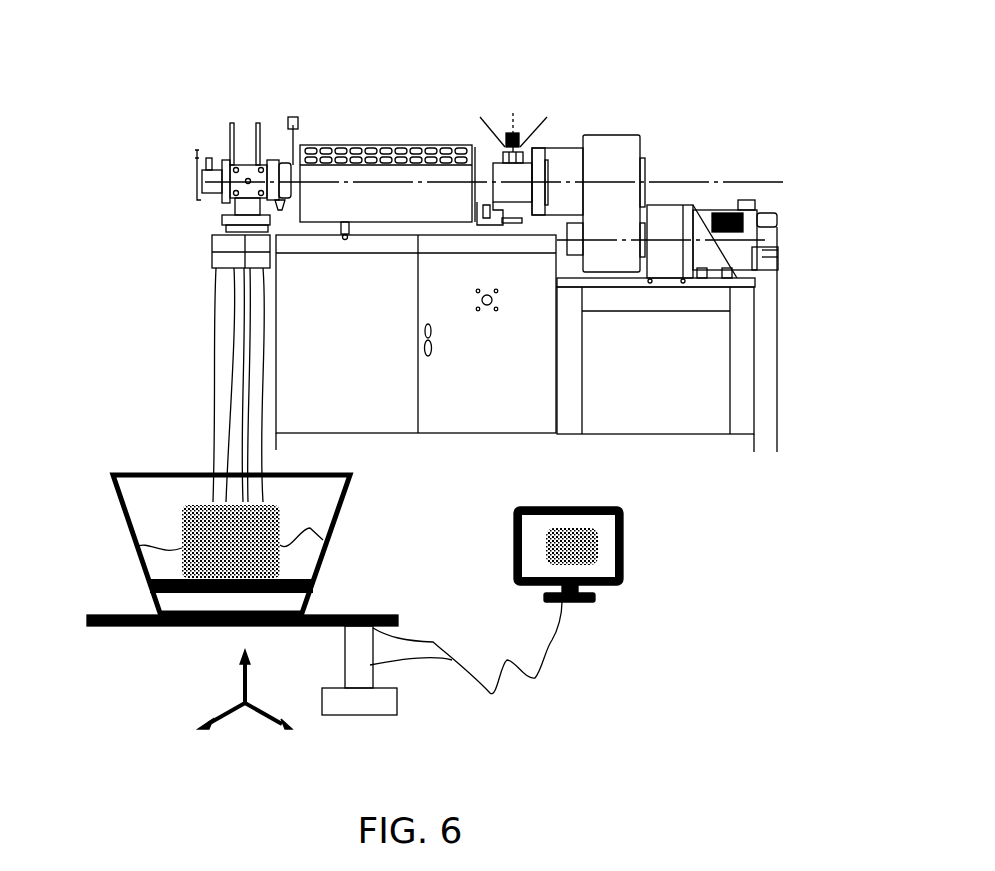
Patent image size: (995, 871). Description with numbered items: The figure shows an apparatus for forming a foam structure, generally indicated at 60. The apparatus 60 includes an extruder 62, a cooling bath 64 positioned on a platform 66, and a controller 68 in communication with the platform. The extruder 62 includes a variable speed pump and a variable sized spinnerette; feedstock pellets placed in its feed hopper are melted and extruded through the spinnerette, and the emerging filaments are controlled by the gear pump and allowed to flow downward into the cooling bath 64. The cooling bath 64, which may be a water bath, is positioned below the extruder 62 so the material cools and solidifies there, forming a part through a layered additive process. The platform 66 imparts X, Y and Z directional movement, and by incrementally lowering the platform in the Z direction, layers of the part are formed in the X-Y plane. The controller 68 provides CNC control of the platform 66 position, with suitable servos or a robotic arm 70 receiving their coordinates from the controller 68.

The apparatus for forming a foam structure 60 is at (588, 100).
The extruder 62 is at (184, 280).
The cooling bath 64 is at (124, 548).
The platform 66 is at (115, 628).
The controller 68 is at (580, 633).
The servos or robotic arm 70 is at (372, 672).